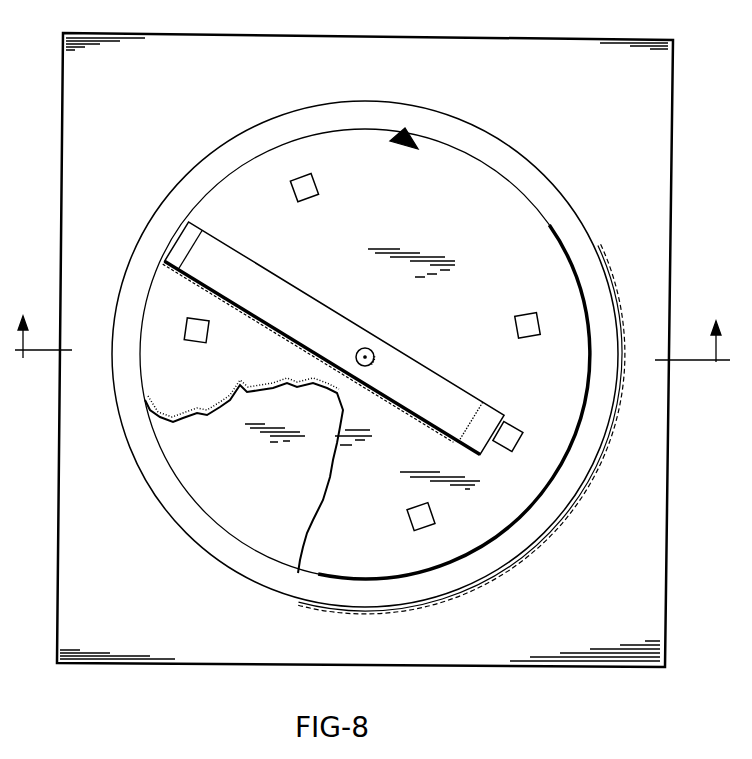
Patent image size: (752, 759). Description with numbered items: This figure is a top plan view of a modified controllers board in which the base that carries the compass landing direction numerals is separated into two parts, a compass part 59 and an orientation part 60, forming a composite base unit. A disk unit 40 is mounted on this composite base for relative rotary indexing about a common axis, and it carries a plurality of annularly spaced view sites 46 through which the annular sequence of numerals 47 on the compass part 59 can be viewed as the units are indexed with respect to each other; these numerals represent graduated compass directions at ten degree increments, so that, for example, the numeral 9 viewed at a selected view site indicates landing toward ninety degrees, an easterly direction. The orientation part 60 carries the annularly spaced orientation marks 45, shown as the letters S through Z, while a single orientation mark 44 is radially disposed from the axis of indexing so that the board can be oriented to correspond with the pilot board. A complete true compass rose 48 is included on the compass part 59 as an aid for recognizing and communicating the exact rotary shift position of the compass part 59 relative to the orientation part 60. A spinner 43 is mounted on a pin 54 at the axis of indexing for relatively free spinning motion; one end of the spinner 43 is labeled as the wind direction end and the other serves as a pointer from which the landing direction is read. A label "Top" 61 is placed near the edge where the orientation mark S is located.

The numeral 9 (compass landing direction numeral) 9 is at (372, 323).
The disk unit 40 is at (248, 353).
The spinner 43 is at (270, 303).
The single orientation mark 44 is at (394, 147).
The annularly spaced orientation marks 45 is at (568, 158).
The view sites or ports 46 is at (204, 372).
The annular sequence of numerals 47 is at (256, 480).
The compass rose 48 is at (287, 570).
The pin 54 is at (368, 352).
The compass part 59 is at (566, 500).
The orientation part 60 is at (131, 611).
The label "Top" 61 is at (181, 34).